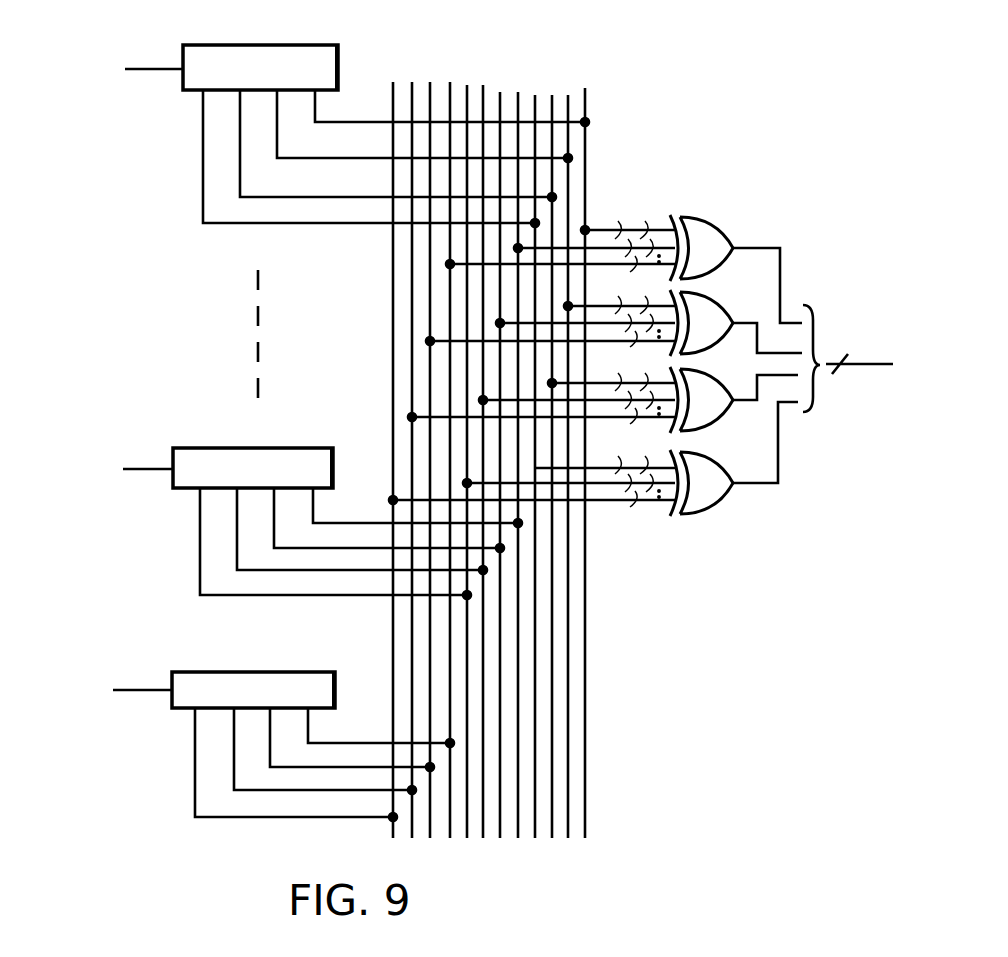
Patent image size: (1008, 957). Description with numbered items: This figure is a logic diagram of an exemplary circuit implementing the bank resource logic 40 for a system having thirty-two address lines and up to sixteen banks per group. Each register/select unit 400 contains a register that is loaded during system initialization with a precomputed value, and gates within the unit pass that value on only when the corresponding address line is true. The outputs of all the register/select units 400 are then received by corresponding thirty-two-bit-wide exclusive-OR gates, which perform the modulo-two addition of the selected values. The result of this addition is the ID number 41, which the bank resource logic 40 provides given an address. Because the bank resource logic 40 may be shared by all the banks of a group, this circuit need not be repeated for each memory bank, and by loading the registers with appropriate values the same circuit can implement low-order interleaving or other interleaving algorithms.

The register/select unit 400 is at (187, 86).
The bank resource logic 40 is at (675, 647).
The ID number 41 is at (858, 362).